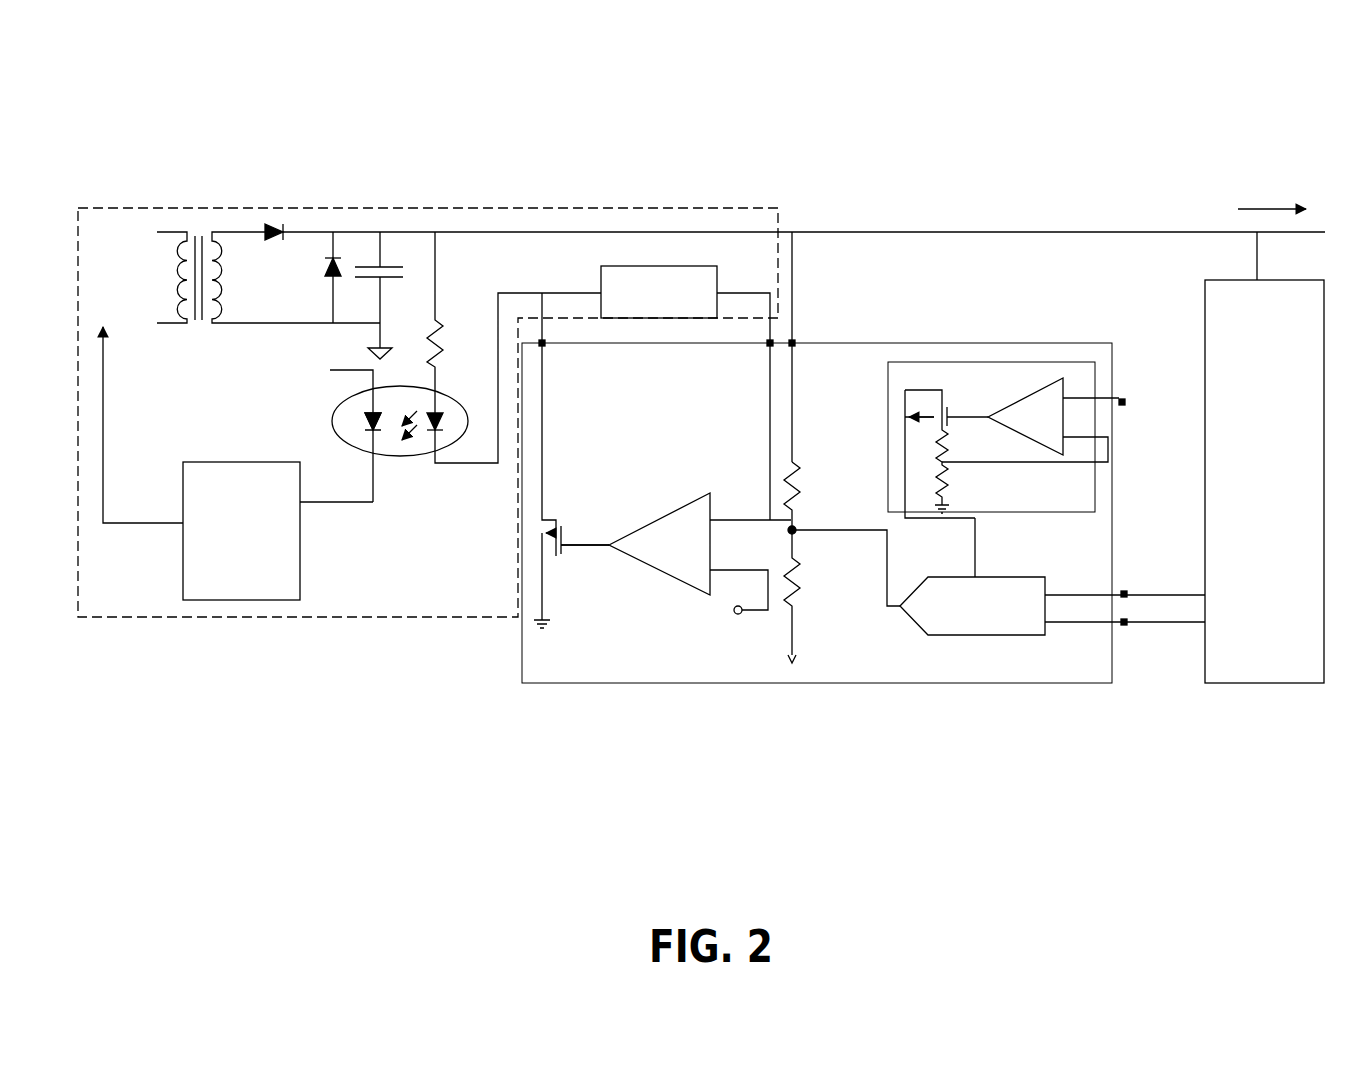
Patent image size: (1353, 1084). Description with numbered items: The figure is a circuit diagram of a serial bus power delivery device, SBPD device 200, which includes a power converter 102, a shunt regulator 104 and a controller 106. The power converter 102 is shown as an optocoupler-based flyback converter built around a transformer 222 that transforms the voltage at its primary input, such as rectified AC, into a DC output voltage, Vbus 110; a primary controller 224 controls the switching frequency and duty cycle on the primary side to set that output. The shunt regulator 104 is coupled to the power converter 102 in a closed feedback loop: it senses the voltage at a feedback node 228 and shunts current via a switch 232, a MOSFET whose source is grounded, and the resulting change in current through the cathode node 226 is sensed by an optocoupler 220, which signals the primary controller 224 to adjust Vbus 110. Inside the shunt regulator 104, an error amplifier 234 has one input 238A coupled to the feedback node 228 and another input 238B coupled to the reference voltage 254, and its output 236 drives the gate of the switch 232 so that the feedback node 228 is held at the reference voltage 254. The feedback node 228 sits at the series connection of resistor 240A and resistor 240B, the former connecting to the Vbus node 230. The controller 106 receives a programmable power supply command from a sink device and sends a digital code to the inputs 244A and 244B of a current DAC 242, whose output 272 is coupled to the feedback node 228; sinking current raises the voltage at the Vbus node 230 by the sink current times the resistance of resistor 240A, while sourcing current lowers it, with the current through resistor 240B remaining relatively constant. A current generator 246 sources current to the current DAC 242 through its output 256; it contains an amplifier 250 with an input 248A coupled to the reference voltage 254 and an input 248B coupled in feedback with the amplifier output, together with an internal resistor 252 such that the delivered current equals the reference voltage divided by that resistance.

The SBPD device 200 is at (391, 74).
The Vbus 110 is at (804, 215).
The power converter 102 is at (198, 619).
The transformer 222 is at (213, 232).
The optocoupler 220 is at (403, 457).
The primary controller 224 is at (238, 463).
The shunt regulator 104 is at (642, 685).
The Vbus node 230 is at (870, 347).
The cathode node 226 is at (581, 480).
The feedback node 228 is at (720, 430).
The switch 232 is at (578, 577).
The amplifier 234 is at (660, 544).
The output of the amplifier 236 is at (590, 513).
The input of amplifier 238A is at (750, 495).
The input of amplifier 238B is at (740, 569).
The reference voltage 254 is at (935, 506).
The resistor R1 240A is at (824, 496).
The resistor R2 240B is at (821, 596).
The output of current generator 256 is at (865, 566).
The current DAC 242 is at (972, 606).
The output of current DAC 272 is at (924, 595).
The input of current DAC 244A is at (1125, 574).
The input of current DAC 244B is at (1125, 645).
The current generator 246 is at (1028, 396).
The amplifier of current generator 250 is at (1005, 416).
The resistor 252 is at (960, 470).
The input of current generator 248A is at (1115, 412).
The input of current generator 248B is at (1055, 448).
The controller 106 is at (1225, 466).